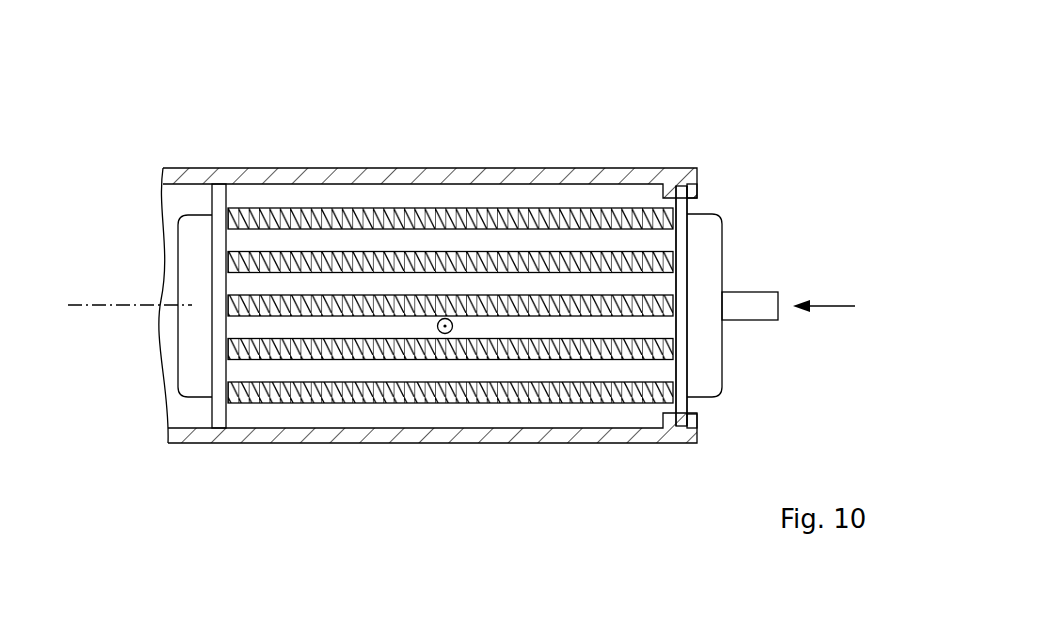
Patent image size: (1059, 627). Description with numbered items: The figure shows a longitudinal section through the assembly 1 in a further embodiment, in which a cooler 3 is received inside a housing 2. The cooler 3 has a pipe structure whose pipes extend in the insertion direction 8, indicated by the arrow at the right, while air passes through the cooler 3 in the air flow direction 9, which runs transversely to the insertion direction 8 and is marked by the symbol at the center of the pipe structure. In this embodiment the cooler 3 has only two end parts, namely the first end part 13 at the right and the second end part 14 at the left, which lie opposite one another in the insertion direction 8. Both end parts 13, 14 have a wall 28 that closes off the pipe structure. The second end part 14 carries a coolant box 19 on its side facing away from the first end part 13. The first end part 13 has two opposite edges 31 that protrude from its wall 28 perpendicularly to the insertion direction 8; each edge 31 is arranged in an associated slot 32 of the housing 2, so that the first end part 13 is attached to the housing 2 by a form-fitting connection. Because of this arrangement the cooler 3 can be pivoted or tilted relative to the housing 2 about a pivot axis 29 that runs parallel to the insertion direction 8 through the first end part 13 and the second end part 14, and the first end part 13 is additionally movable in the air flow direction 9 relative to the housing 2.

The assembly 1 is at (461, 253).
The housing 2 is at (499, 165).
The cooler 3 is at (463, 197).
The insertion direction 8 is at (828, 302).
The air flow direction 9 is at (445, 334).
The first end part 13 is at (729, 239).
The second end part 14 is at (173, 242).
The coolant box 19 is at (195, 352).
The wall 28 is at (217, 408).
The pivot axis 29 is at (87, 300).
The edge 31 is at (678, 190).
The slot 32 is at (690, 198).